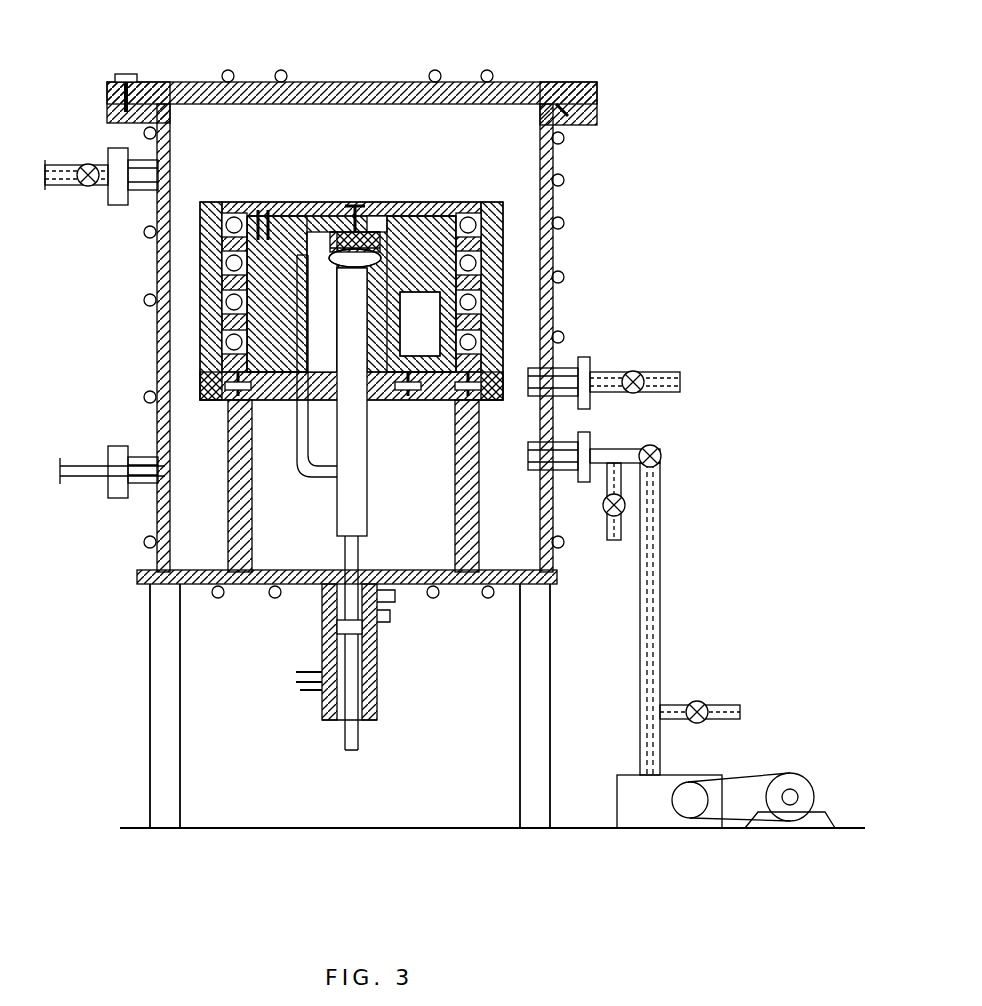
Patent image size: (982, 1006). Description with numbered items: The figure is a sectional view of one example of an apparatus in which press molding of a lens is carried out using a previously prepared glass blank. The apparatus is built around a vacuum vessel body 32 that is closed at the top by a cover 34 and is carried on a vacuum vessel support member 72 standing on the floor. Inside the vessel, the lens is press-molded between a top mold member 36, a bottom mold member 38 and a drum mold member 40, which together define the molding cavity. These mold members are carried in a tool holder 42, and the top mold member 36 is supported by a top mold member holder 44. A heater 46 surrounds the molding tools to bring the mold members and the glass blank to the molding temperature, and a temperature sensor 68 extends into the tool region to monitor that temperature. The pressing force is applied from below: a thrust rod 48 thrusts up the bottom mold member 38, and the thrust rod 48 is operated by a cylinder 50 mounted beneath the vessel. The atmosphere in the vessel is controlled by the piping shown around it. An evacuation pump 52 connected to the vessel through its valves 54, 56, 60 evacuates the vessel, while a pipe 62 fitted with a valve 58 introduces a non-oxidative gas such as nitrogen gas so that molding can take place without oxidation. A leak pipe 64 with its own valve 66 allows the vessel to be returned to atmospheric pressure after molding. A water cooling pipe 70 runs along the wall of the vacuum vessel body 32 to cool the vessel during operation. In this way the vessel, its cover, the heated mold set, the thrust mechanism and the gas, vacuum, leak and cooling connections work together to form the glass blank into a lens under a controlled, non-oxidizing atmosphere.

The vacuum vessel body 32 is at (556, 207).
The cover 34 is at (372, 82).
The top mold member 36 is at (330, 232).
The bottom mold member 38 is at (393, 257).
The drum mold member 40 is at (413, 272).
The tool holder 42 is at (445, 287).
The top mold member holder 44 is at (300, 205).
The heater 46 is at (205, 262).
The thrust rod 48 is at (353, 490).
The cylinder 50 is at (378, 692).
The evacuation pump 52 is at (700, 795).
The valve 54 is at (662, 458).
The valve 56 is at (607, 515).
The valve 58 is at (640, 372).
The valve 60 is at (695, 702).
The pipe 62 is at (560, 370).
The leak pipe 64 is at (108, 165).
The valve 66 is at (88, 188).
The temperature sensor 68 is at (303, 305).
The water cooling pipe 70 is at (565, 223).
The vacuum vessel support member 72 is at (180, 762).